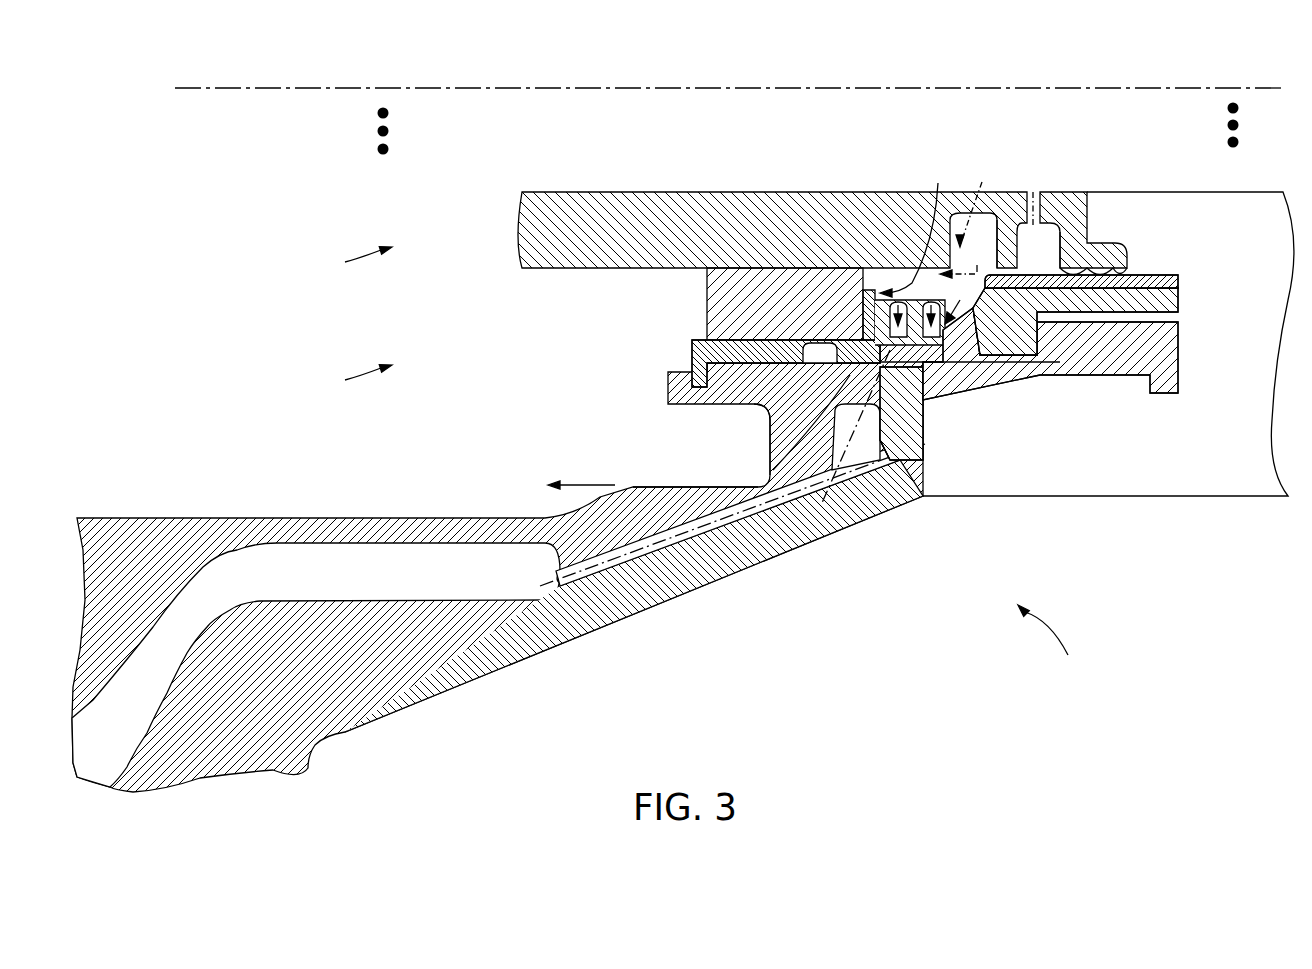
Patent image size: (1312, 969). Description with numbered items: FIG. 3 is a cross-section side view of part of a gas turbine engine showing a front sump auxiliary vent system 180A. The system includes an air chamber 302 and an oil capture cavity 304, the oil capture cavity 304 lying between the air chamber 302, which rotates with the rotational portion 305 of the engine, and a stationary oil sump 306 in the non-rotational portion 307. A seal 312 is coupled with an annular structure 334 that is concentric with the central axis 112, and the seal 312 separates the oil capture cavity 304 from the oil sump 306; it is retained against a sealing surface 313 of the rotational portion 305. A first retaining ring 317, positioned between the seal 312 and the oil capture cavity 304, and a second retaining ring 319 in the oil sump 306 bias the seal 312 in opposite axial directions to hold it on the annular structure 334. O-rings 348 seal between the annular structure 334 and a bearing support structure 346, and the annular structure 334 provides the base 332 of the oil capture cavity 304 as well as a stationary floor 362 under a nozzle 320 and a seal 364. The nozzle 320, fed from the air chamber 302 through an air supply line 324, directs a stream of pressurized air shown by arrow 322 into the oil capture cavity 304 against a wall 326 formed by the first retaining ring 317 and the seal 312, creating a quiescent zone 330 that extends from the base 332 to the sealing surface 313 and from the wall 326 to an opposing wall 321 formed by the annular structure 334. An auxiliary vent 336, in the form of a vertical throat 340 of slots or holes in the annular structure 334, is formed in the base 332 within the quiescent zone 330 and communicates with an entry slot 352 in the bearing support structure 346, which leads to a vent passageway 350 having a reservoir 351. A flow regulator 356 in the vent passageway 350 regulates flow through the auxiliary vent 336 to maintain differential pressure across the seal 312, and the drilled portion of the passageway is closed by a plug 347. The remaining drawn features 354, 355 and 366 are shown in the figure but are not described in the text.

The central axis 112 is at (298, 86).
The front sump auxiliary vent system 180A is at (1057, 644).
The air chamber 302 is at (1068, 237).
The oil capture cavity 304 is at (977, 265).
The rotational portion 305 is at (350, 264).
The oil sump 306 is at (575, 347).
The non-rotational portion 307 is at (350, 381).
The seal 312 is at (806, 323).
The sealing surface 313 is at (772, 262).
The first retaining ring 317 is at (875, 290).
The second retaining ring 319 is at (698, 345).
The nozzle 320 is at (1006, 250).
The opposing wall 321 is at (1008, 395).
The arrow 322 is at (966, 215).
The air supply line 324 is at (1036, 200).
The wall 326 is at (918, 225).
The quiescent zone 330 is at (992, 395).
The base 332 is at (935, 385).
The annular structure 334 is at (1040, 390).
The auxiliary vent 336 is at (866, 472).
The vertical throat 340 is at (926, 400).
The bearing support structure 346 is at (600, 522).
The plug 347 is at (893, 425).
The O-rings 348 is at (752, 407).
The vent passageway 350 is at (744, 542).
The reservoir 351 is at (858, 500).
The entry slot 352 is at (770, 470).
The recess 354 is at (663, 485).
The shroud arm 355 is at (637, 487).
The flow regulator 356 is at (568, 588).
The stationary floor 362 is at (1128, 275).
The seal 364 is at (1095, 250).
The casing cavity 366 is at (1270, 267).